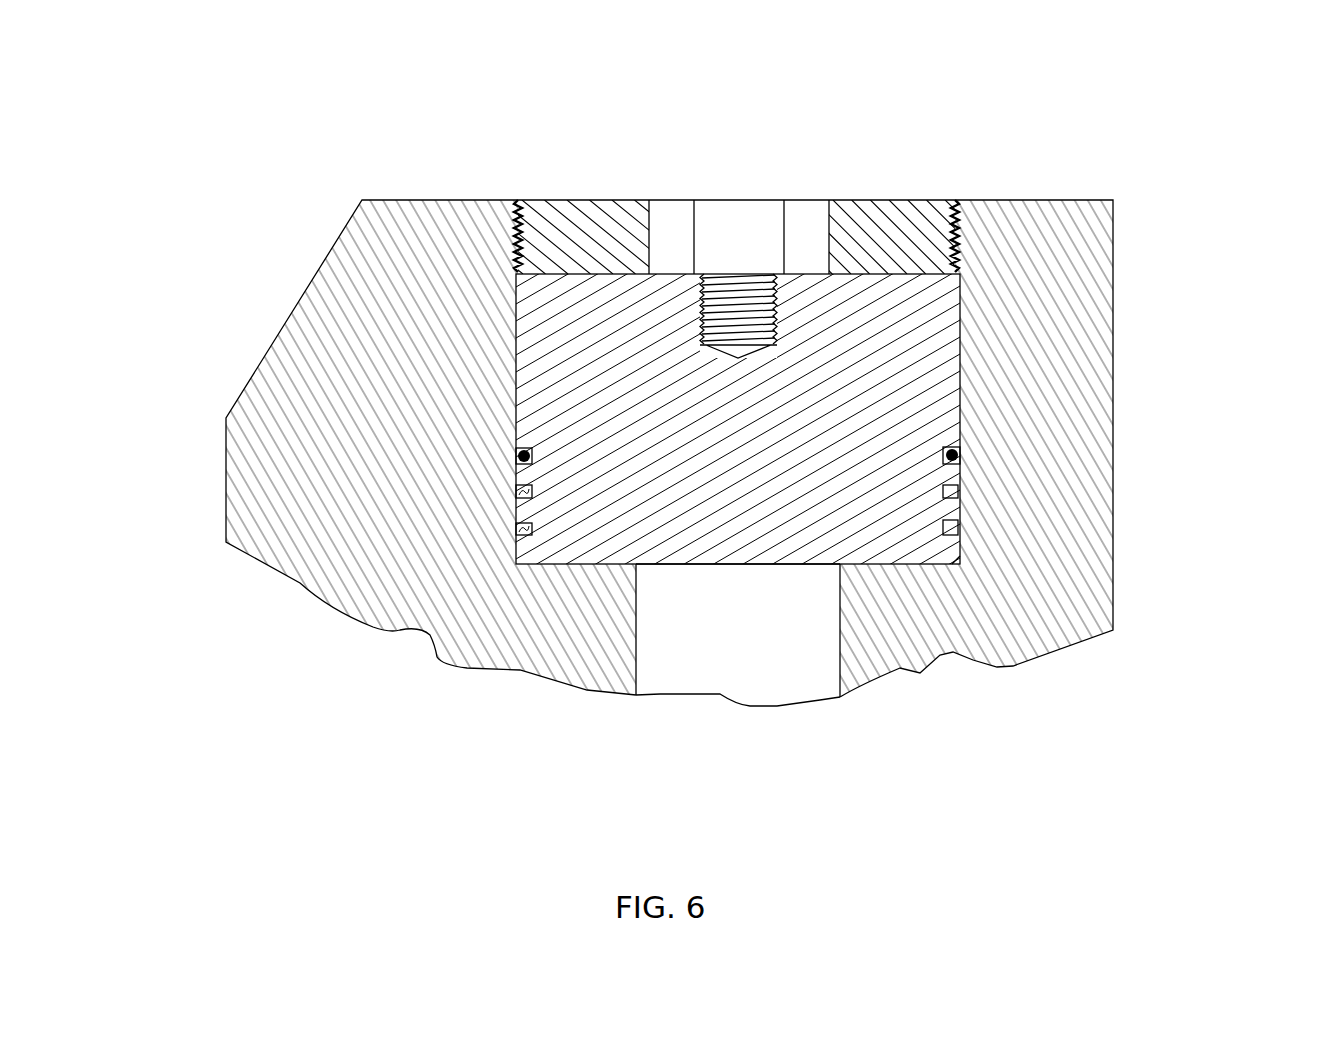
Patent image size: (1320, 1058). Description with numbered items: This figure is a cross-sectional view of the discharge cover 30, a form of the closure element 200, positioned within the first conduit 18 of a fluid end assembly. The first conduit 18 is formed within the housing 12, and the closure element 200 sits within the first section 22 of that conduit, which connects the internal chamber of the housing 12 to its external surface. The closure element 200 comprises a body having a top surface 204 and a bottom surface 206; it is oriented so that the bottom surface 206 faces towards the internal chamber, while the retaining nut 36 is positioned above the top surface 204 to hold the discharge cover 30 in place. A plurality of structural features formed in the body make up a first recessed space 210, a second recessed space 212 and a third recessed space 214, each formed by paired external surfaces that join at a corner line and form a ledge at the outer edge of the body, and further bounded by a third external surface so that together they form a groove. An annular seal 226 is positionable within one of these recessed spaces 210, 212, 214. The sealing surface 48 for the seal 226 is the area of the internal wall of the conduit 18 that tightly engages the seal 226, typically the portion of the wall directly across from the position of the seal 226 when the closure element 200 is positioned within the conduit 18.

The housing 12 is at (347, 223).
The first conduit 18 is at (692, 669).
The first section 22 is at (840, 647).
The discharge cover 30 is at (912, 357).
The retaining nut 36 is at (893, 200).
The sealing surface 48 is at (960, 460).
The closure element 200 is at (608, 318).
The top surface 204 is at (800, 275).
The bottom surface 206 is at (740, 564).
The first recessed space 210 is at (521, 454).
The second recessed space 212 is at (521, 494).
The third recessed space 214 is at (521, 531).
The annular seal 226 is at (960, 452).